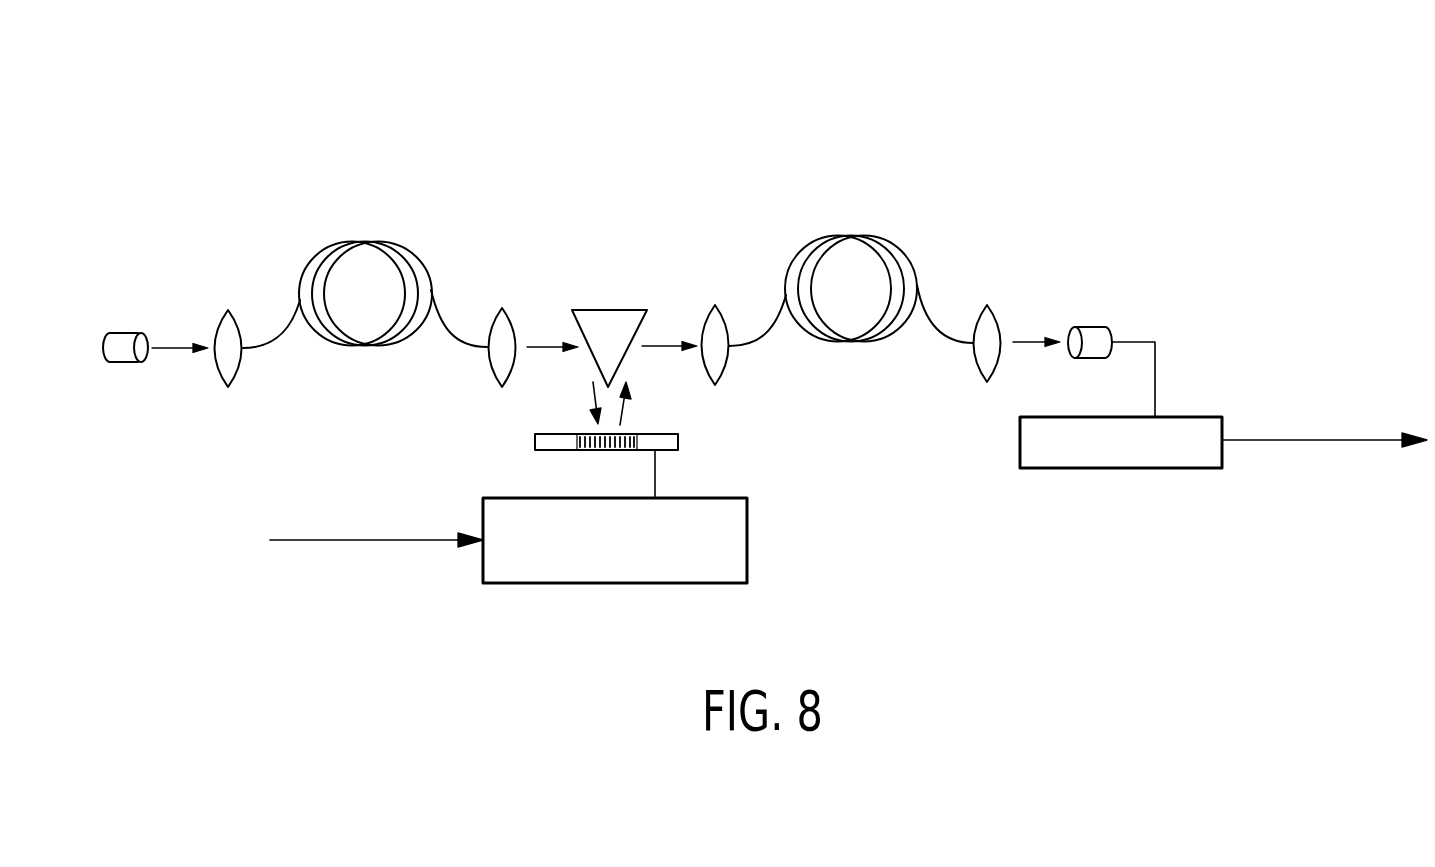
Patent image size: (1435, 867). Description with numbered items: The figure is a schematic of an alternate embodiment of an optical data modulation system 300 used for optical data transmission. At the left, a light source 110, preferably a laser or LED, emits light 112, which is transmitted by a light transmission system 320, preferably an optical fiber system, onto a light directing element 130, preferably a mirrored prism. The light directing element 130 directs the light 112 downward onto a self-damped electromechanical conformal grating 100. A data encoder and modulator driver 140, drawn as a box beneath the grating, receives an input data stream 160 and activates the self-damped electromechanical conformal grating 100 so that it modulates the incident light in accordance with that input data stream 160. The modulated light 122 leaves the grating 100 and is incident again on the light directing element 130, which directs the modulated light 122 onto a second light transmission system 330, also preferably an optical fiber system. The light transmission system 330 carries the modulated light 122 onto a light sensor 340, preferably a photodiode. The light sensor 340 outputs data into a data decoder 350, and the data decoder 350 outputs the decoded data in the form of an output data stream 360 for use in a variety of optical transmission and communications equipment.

The optical data modulation system 300 is at (630, 146).
The light source 110 is at (117, 333).
The light 112 is at (178, 349).
The light transmission system 320 is at (360, 241).
The light directing element 130 is at (600, 310).
The modulated light 122 is at (623, 410).
The self-damped electromechanical conformal grating 100 is at (678, 441).
The data encoder and modulator driver 140 is at (708, 583).
The input data stream 160 is at (378, 542).
The light transmission system 330 is at (853, 238).
The light sensor 340 is at (1095, 325).
The data decoder 350 is at (1073, 468).
The output data stream 360 is at (1305, 438).